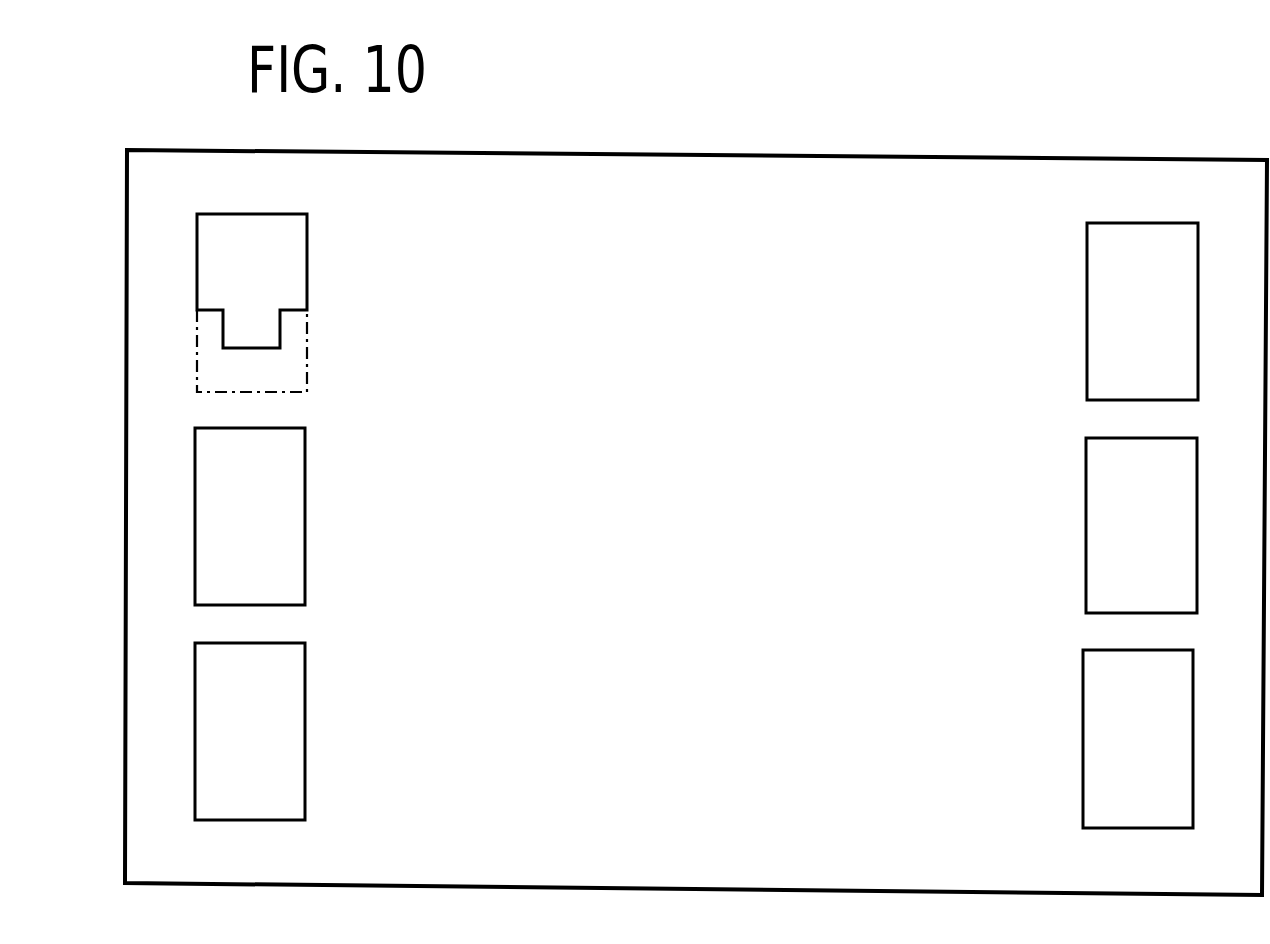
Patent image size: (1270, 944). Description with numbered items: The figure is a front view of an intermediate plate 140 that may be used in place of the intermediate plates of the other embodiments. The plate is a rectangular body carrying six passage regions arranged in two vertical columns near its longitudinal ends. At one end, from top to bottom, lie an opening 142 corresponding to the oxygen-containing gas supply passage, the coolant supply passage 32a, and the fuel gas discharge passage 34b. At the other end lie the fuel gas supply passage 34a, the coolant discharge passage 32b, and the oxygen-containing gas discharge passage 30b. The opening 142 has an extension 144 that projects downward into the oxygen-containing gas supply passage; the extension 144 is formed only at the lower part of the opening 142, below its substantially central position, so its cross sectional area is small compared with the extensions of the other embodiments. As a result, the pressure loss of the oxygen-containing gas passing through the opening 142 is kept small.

The intermediate plate 140 is at (1106, 126).
The opening 142 is at (252, 281).
The extension 144 is at (289, 368).
The coolant supply passage 32a is at (250, 516).
The fuel gas discharge passage 34b is at (250, 731).
The fuel gas supply passage 34a is at (1142, 311).
The coolant discharge passage 32b is at (1141, 525).
The oxygen-containing gas discharge passage 30b is at (1138, 739).